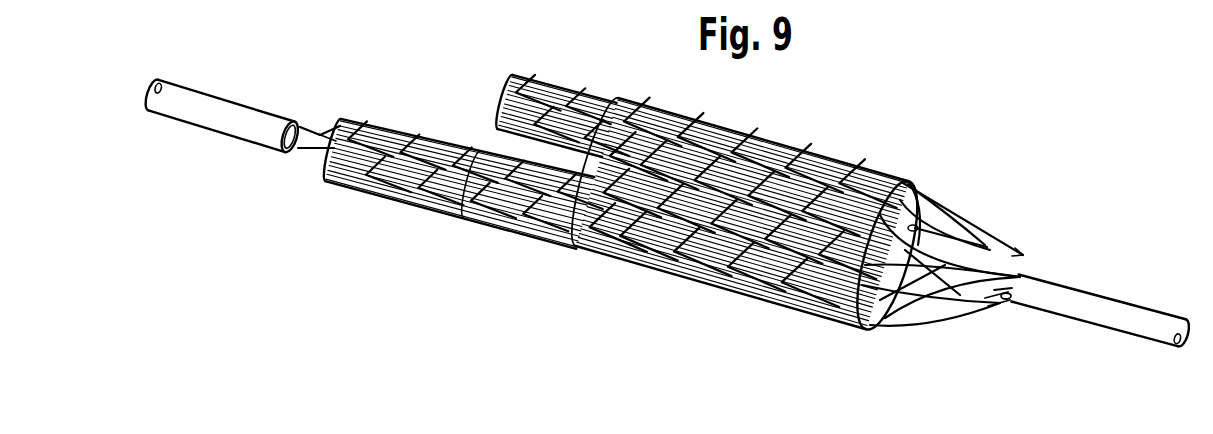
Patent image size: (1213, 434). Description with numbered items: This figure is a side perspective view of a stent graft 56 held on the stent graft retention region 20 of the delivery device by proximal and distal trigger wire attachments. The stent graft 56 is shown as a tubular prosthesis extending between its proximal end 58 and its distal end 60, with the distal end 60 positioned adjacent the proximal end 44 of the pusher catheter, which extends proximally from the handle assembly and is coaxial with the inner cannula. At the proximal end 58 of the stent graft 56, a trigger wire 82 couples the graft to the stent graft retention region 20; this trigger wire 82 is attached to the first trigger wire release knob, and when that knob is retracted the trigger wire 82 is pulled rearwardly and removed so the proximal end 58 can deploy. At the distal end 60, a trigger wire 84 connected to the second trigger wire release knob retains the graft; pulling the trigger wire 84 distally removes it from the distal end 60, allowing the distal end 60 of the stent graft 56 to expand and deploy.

The proximal end 44 is at (259, 110).
The trigger wire 84 is at (306, 124).
The distal end 60 is at (418, 197).
The stent graft 56 is at (730, 130).
The proximal end 58 is at (865, 168).
The stent graft retention region 20 is at (933, 260).
The trigger wire 82 is at (1001, 304).